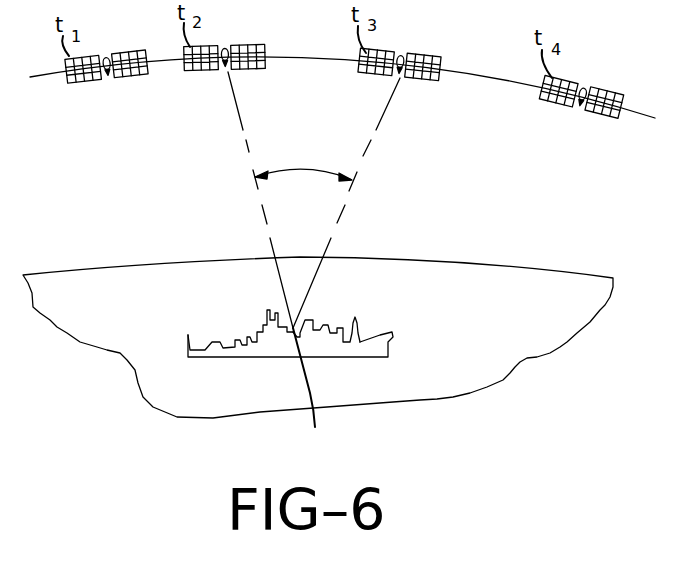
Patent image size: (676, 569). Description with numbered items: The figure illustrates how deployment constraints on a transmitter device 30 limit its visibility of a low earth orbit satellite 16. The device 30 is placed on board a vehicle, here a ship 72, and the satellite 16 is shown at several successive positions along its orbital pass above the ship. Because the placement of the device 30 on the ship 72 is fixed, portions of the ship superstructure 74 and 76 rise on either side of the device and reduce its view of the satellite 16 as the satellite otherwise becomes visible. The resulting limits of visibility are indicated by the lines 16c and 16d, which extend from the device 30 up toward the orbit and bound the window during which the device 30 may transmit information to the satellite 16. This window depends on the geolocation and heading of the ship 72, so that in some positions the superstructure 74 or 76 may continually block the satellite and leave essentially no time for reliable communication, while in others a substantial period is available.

The satellite 16 is at (110, 75).
The line indicating limit of visibility 16c is at (266, 223).
The line indicating limit of visibility 16d is at (340, 223).
The transmitter device 30 is at (310, 393).
The ship 72 is at (320, 315).
The ship superstructure 74 is at (317, 325).
The ship superstructure 76 is at (267, 310).